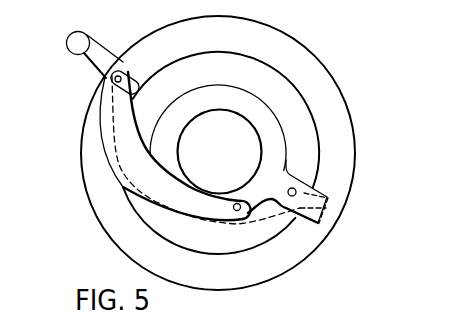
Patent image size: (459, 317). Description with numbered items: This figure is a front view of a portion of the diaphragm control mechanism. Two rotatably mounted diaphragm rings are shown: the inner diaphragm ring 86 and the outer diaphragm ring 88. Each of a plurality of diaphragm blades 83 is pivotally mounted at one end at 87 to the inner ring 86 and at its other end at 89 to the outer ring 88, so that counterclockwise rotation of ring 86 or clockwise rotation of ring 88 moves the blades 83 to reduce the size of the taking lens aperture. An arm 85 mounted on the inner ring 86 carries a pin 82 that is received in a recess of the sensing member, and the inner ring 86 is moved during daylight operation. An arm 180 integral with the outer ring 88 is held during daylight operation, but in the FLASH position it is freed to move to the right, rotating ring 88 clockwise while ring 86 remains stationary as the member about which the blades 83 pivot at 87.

The outer diaphragm ring 88 is at (351, 118).
The inner diaphragm ring 86 is at (273, 116).
The diaphragm blade 83 is at (213, 226).
The pivot of diaphragm blade on ring 86 87 is at (241, 209).
The pivot of diaphragm blade on ring 88 89 is at (122, 70).
The arm 180 is at (67, 48).
The pin 82 is at (294, 189).
The arm 85 is at (330, 199).